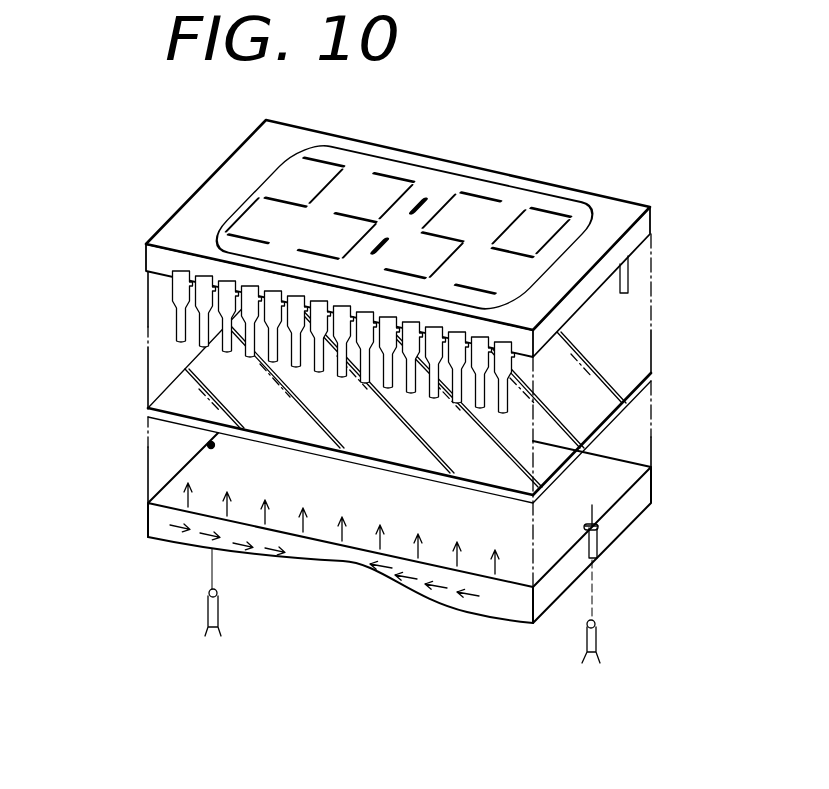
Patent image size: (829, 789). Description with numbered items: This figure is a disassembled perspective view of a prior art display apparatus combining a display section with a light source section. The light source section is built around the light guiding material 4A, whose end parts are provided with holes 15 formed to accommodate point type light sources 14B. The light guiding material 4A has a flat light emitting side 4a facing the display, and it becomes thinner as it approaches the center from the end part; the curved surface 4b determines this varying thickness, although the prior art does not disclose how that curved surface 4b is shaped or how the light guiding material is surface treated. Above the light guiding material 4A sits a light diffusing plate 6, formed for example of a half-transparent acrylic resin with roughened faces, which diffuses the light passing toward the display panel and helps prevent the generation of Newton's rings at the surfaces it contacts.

The light diffusing plate 6 is at (399, 399).
The light guiding material 4A is at (407, 564).
The flat light emitting side 4a is at (627, 474).
The curved surface 4b is at (468, 611).
The holes 15 is at (212, 446).
The point type light sources 14B is at (206, 606).